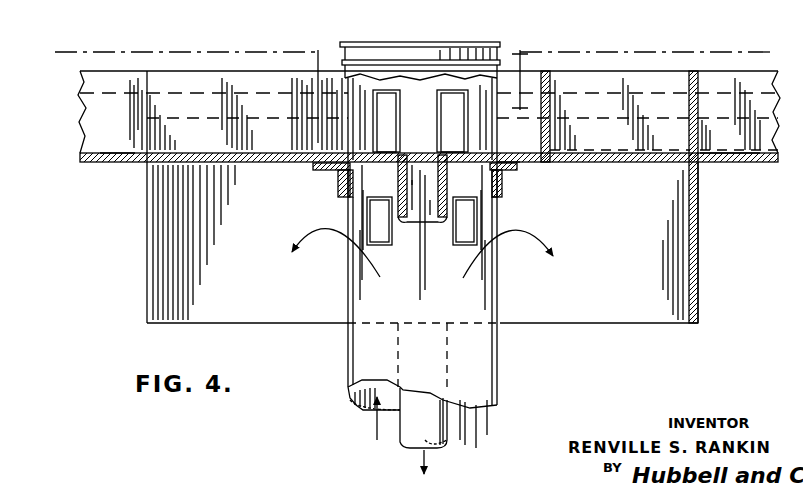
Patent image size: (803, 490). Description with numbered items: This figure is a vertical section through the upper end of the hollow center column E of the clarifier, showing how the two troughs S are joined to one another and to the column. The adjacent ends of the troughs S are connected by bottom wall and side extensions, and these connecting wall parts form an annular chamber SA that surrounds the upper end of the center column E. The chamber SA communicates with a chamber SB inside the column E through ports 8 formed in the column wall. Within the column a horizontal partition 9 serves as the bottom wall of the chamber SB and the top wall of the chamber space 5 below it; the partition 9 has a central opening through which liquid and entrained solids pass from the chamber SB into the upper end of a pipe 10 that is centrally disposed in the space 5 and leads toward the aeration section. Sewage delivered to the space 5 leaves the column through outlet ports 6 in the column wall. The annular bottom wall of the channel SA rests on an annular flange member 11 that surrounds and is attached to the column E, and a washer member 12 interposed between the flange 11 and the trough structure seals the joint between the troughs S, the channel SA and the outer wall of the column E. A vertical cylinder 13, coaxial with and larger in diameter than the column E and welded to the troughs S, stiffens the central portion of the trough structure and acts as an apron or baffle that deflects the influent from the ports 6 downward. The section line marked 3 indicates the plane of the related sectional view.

The section line 3- 3 is at (62, 22).
The annular chamber SA is at (403, 157).
The ports 8 is at (440, 157).
The chamber SB is at (420, 153).
The washer member 12 is at (503, 158).
The annular flange member 11 is at (507, 170).
The horizontal partition 9 is at (342, 190).
The outlet ports 6 is at (463, 222).
The hollow center column structure E is at (490, 310).
The vertical cylinder 13 is at (700, 247).
The troughs S is at (118, 148).
The chamber space 5 is at (360, 410).
The pipe 10 is at (450, 423).